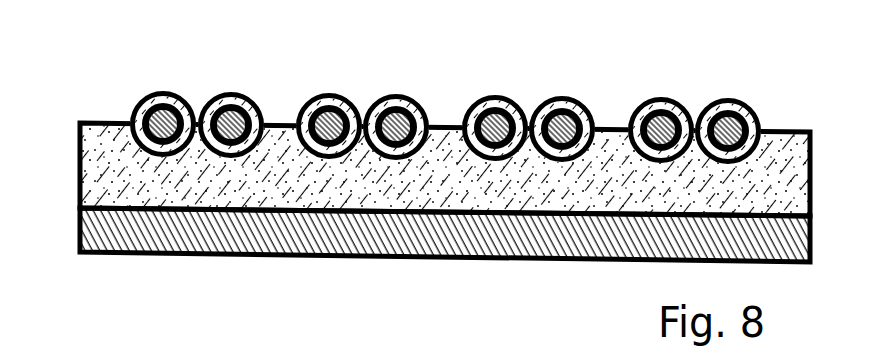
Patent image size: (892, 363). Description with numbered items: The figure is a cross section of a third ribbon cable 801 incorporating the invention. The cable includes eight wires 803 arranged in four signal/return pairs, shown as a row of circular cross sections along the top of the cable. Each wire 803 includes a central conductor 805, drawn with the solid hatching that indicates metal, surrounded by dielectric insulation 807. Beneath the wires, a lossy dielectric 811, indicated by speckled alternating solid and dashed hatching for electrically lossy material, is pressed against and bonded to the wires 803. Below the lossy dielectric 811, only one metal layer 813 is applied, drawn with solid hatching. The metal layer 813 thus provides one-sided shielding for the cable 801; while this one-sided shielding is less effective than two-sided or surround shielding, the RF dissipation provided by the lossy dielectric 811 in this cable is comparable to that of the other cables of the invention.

The third ribbon cable 801 is at (163, 73).
The wires 803 is at (392, 94).
The conductor 805 is at (547, 108).
The dielectric insulation 807 is at (722, 100).
The lossy dielectric 811 is at (462, 190).
The metal layer 813 is at (438, 246).